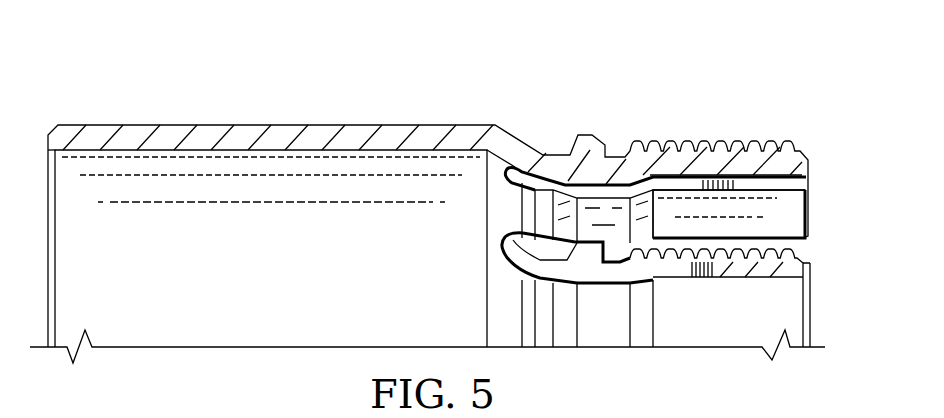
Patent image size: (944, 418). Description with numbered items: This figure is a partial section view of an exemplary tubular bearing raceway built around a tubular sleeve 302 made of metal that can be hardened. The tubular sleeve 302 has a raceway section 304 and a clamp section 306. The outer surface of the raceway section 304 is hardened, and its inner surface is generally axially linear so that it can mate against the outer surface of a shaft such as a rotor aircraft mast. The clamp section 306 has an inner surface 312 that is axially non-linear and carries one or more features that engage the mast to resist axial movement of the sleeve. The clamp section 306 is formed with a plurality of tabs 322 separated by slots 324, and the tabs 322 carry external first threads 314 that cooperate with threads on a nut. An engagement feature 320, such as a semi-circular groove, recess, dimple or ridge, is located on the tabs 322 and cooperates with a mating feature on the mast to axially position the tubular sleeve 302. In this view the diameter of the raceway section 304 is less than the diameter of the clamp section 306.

The tubular sleeve 302 is at (176, 133).
The raceway section 304 is at (48, 56).
The clamp section 306 is at (825, 56).
The inner surface of clamp section 312 is at (787, 202).
The first threads 314 is at (730, 142).
The engagement feature 320 is at (608, 213).
The tabs 322 is at (793, 222).
The slots 324 is at (797, 245).